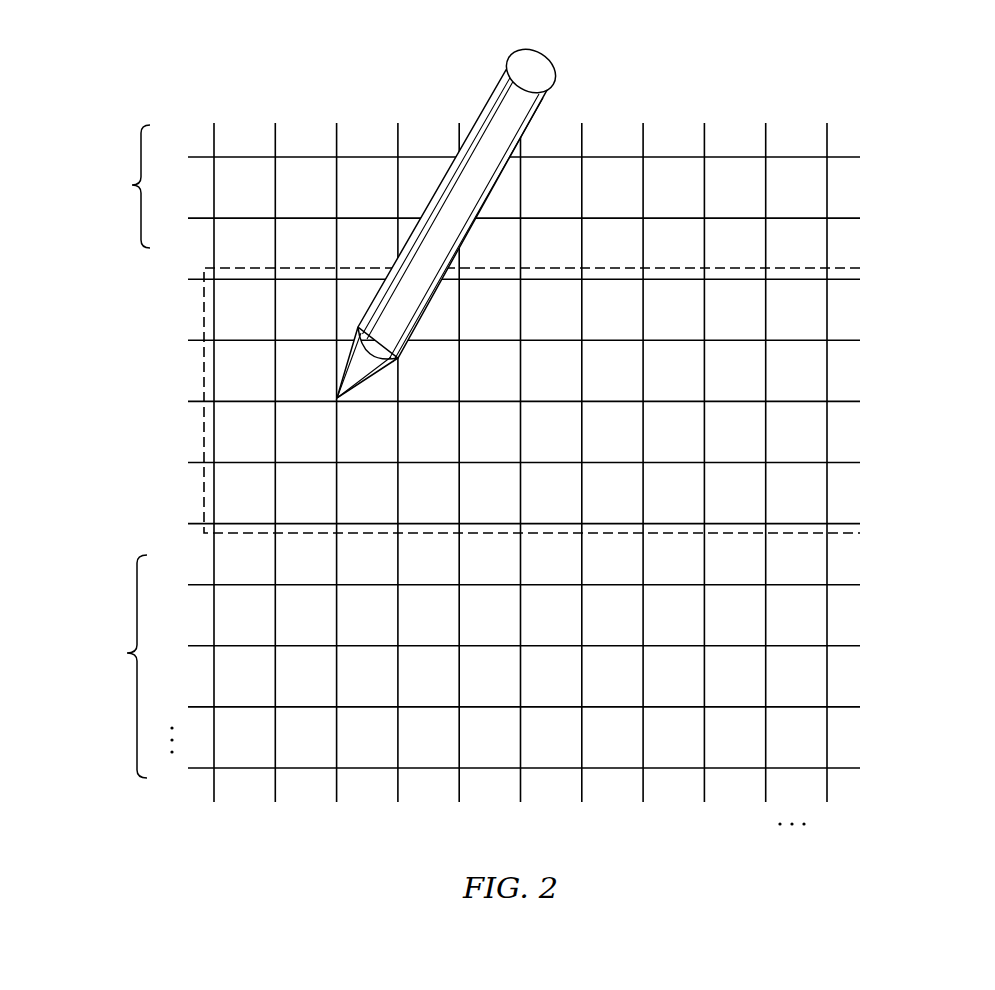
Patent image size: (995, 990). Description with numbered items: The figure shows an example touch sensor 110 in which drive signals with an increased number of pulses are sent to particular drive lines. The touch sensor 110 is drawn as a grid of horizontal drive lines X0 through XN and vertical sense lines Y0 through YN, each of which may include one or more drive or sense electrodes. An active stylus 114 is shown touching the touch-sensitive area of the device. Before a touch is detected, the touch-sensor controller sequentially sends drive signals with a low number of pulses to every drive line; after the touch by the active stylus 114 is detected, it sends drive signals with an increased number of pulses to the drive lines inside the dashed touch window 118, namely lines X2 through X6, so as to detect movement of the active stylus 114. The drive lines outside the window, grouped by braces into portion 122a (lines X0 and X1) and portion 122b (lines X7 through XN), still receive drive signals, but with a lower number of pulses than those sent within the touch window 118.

The touch sensor 110 is at (316, 68).
The active stylus 114 is at (545, 100).
The touch window 118 is at (196, 359).
The portion 122a is at (133, 184).
The portion 122b is at (127, 653).